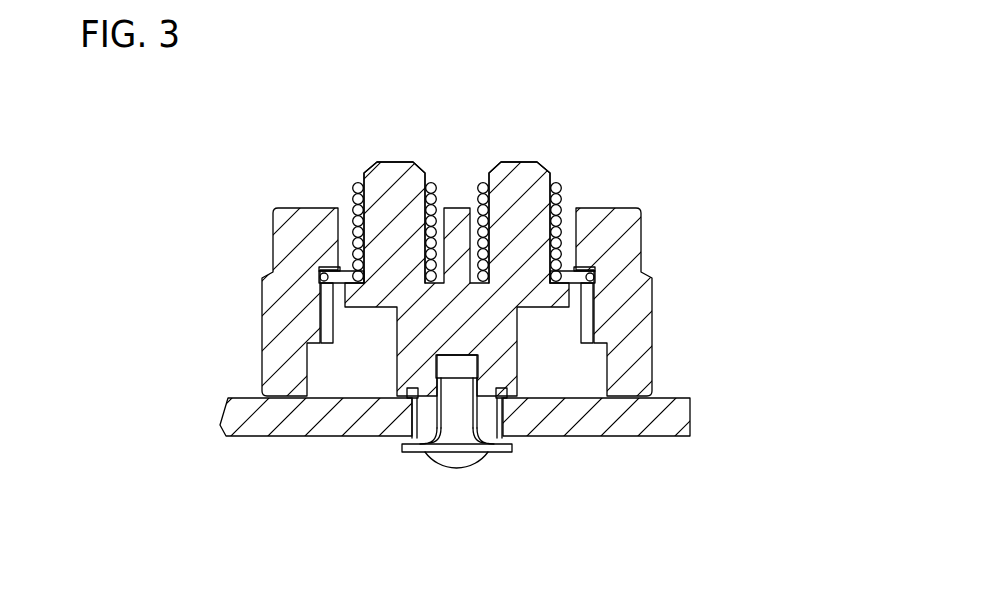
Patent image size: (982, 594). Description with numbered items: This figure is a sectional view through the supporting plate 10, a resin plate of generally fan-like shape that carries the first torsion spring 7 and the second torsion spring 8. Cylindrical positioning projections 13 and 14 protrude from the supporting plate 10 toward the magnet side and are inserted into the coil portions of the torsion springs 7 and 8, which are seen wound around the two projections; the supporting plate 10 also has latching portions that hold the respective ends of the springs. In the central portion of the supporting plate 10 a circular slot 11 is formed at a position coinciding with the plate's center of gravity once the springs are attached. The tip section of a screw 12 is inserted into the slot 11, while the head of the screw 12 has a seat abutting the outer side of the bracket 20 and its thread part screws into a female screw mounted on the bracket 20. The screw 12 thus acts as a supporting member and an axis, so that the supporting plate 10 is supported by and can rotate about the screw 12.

The first torsion spring 7 is at (567, 192).
The second torsion spring 8 is at (352, 200).
The supporting plate 10 is at (653, 323).
The slot 11 is at (458, 358).
The screw 12 is at (462, 468).
The positioning projection 13 is at (517, 163).
The positioning projection 14 is at (392, 163).
The bracket 20 is at (607, 436).